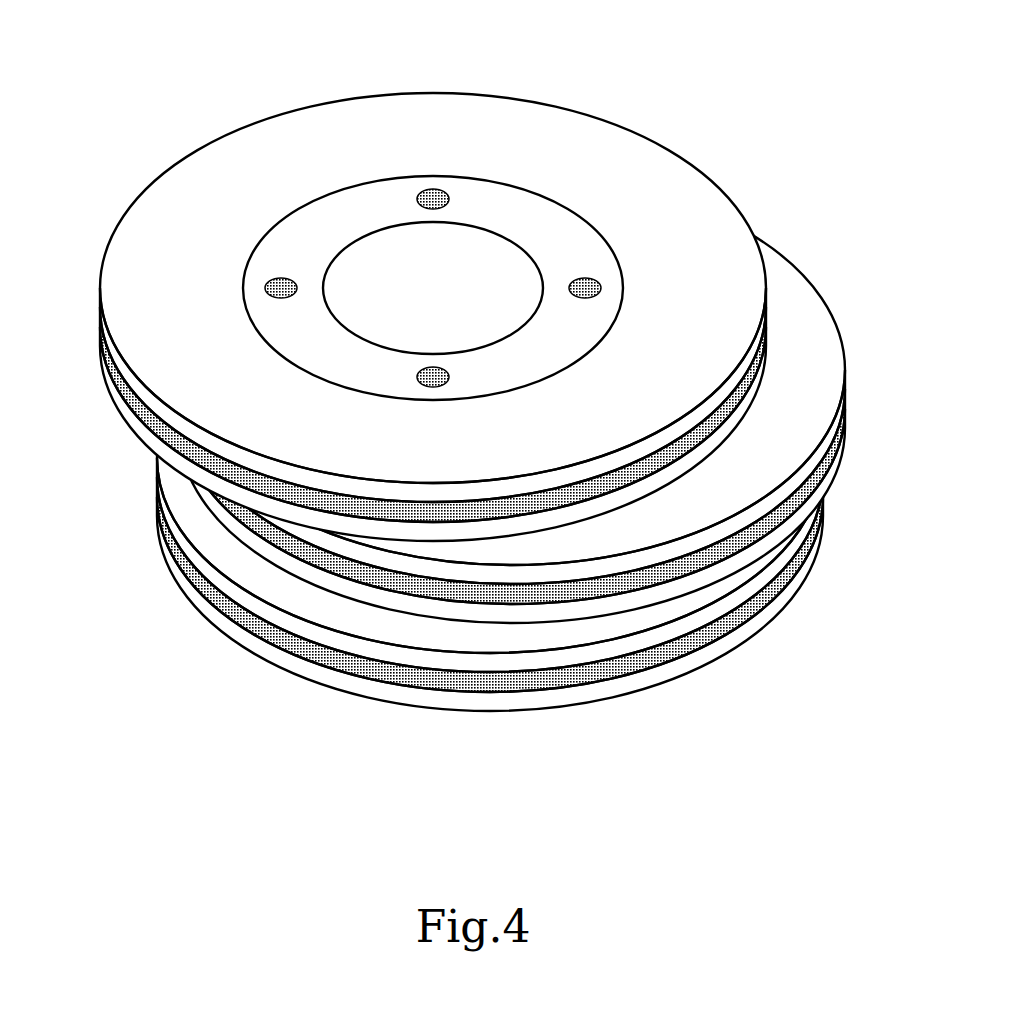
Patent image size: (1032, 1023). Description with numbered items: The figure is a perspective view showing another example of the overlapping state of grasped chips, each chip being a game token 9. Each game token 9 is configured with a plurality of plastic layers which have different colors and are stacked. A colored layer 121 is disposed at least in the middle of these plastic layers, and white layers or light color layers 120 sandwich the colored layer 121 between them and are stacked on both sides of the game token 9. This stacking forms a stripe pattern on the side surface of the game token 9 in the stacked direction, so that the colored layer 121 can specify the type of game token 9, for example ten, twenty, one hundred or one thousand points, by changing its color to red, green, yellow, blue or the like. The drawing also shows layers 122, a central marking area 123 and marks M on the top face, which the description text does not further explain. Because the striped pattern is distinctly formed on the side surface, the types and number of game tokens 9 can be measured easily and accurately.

The game token 9 is at (223, 167).
The white layer or light color layer 120 is at (712, 207).
The colored layer 121 is at (137, 408).
The outer layer 122 is at (128, 373).
The center marking area 123 is at (477, 243).
The mark M is at (590, 275).